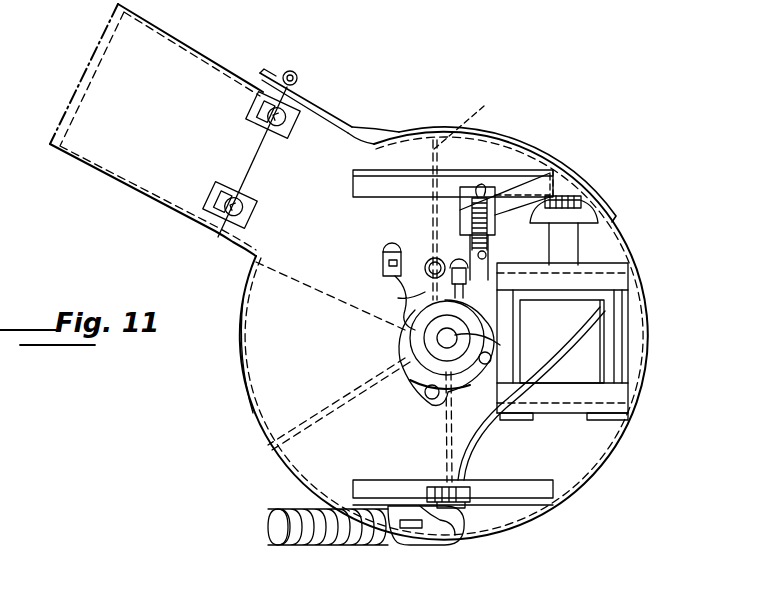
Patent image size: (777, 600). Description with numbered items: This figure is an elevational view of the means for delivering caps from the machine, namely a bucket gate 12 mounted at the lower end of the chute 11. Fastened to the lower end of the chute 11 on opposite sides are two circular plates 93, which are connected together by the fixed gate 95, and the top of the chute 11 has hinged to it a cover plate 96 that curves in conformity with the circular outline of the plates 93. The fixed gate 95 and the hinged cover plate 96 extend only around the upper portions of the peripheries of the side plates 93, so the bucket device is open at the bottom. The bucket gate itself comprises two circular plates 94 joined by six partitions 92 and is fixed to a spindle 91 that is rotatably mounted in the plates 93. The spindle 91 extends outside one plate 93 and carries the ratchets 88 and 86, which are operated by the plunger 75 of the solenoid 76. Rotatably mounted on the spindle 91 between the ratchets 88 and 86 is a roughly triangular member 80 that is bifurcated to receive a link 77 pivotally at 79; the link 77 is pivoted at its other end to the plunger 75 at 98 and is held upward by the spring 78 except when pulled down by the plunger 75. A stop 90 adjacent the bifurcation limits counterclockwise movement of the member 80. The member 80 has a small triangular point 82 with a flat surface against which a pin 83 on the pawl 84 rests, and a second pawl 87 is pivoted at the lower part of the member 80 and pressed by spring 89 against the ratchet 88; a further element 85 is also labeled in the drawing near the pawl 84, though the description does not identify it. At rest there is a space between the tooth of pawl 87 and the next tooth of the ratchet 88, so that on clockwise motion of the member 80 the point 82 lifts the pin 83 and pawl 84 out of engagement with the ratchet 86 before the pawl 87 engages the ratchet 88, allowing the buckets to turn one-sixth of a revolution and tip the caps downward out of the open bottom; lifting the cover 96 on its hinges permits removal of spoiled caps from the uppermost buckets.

The chute 11 is at (215, 70).
The bucket gate 12 is at (598, 452).
The plunger 75 is at (578, 242).
The solenoid 76 is at (590, 352).
The link 77 is at (480, 272).
The spring 78 is at (478, 204).
The pivot 79 is at (462, 318).
The triangular member 80 is at (455, 380).
The triangular point 82 is at (420, 332).
The pin 83 is at (415, 312).
The pawl 84 is at (428, 258).
The bracket 85 is at (395, 288).
The ratchet 86 is at (405, 352).
The second pawl 87 is at (425, 398).
The ratchet 88 is at (492, 370).
The spring 89 is at (420, 385).
The stop 90 is at (466, 282).
The spindle 91 is at (470, 338).
The partitions 92 is at (312, 268).
The plates 93 is at (348, 128).
The circular plates 94 is at (535, 153).
The fixed gate 95 is at (242, 298).
The cover plate 96 is at (320, 105).
The pivot 98 is at (568, 200).